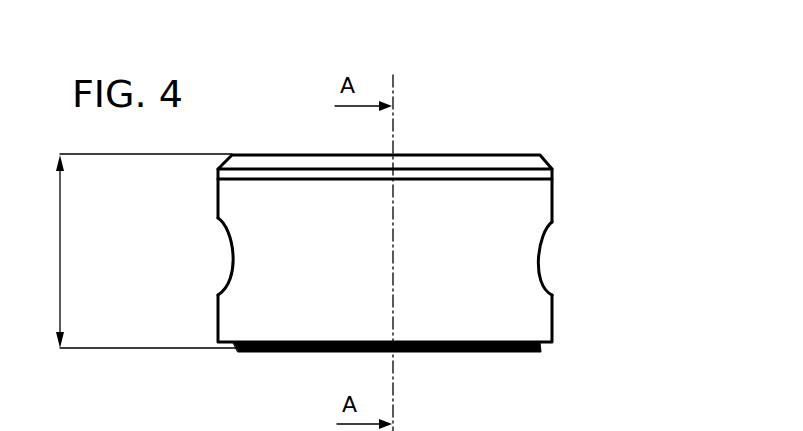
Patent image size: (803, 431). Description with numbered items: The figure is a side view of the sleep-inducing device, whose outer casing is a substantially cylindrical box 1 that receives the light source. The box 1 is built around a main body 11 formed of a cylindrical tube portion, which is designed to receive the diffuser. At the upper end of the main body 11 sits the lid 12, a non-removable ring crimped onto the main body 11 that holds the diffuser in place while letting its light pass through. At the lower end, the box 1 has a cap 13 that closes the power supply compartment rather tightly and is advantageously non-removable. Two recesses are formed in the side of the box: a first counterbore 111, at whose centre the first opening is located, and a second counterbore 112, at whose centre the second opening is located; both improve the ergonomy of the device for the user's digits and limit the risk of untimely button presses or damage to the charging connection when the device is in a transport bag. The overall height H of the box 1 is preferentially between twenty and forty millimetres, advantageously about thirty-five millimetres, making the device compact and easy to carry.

The box 1 is at (425, 215).
The main body 11 is at (425, 266).
The first counterbore 111 is at (540, 252).
The second counterbore 112 is at (229, 258).
The lid 12 is at (482, 155).
The cap 13 is at (268, 351).
The height H is at (129, 251).